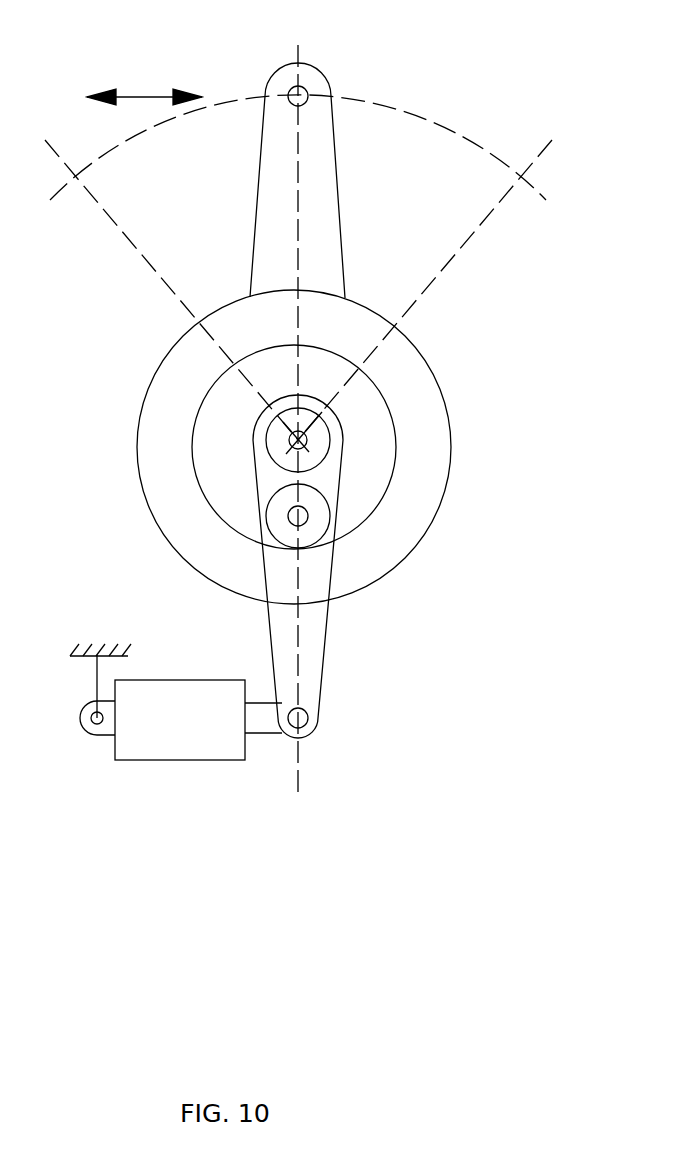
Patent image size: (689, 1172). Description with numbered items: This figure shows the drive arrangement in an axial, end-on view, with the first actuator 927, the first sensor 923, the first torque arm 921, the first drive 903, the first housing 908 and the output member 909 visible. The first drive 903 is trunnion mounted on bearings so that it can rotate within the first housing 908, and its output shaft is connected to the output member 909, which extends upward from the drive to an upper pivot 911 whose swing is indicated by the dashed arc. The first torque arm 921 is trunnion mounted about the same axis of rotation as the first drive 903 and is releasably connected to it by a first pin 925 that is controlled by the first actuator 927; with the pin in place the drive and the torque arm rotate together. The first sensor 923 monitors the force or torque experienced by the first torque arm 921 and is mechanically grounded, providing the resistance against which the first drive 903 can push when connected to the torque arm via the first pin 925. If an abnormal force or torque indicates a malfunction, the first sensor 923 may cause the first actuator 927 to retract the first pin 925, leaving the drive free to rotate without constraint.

The first drive 903 is at (200, 417).
The first housing 908 is at (167, 350).
The output member 909 is at (337, 157).
The top pivot 911 is at (315, 62).
The first torque arm 921 is at (326, 655).
The first sensor 923 is at (140, 762).
The first pin 925 is at (288, 518).
The first actuator 927 is at (324, 495).